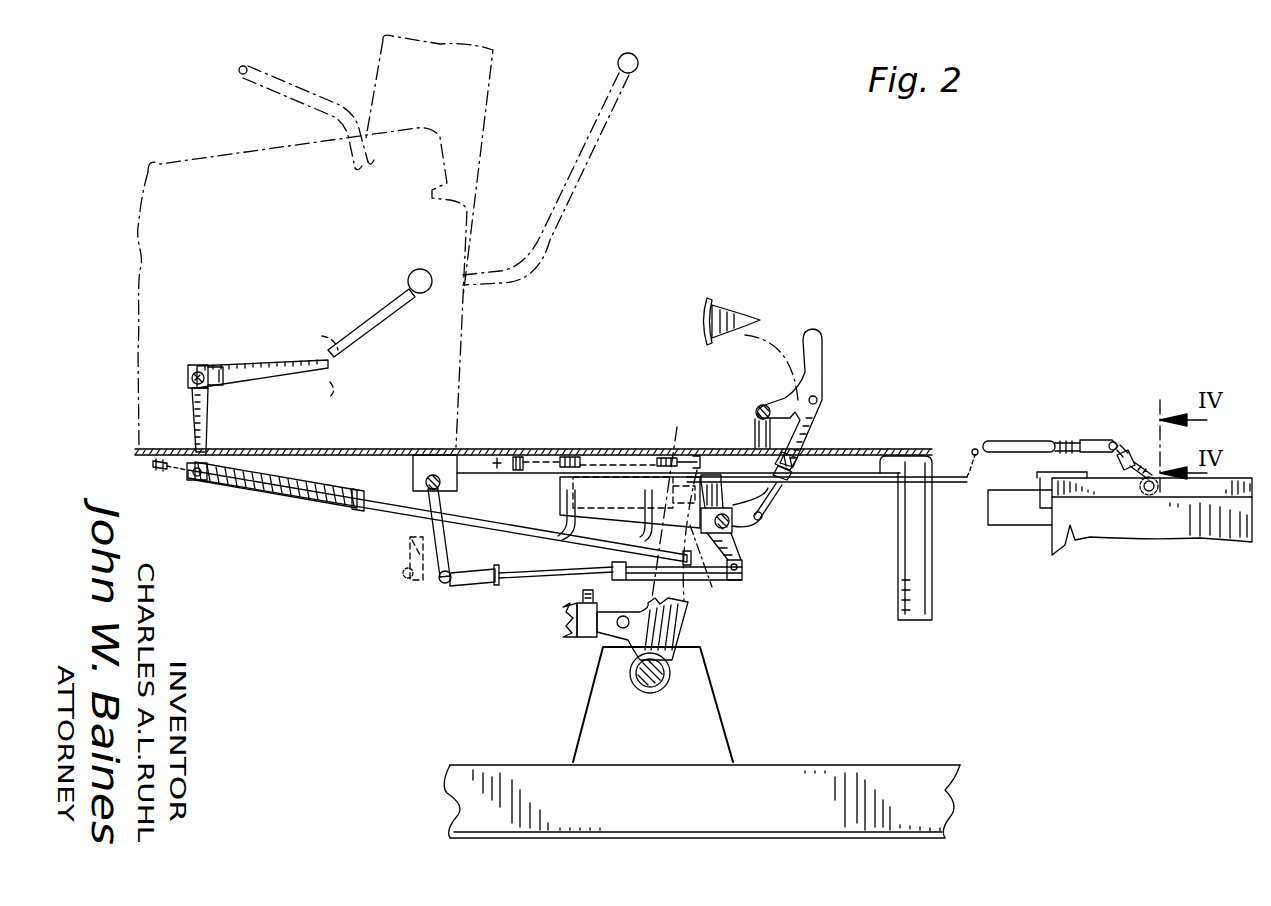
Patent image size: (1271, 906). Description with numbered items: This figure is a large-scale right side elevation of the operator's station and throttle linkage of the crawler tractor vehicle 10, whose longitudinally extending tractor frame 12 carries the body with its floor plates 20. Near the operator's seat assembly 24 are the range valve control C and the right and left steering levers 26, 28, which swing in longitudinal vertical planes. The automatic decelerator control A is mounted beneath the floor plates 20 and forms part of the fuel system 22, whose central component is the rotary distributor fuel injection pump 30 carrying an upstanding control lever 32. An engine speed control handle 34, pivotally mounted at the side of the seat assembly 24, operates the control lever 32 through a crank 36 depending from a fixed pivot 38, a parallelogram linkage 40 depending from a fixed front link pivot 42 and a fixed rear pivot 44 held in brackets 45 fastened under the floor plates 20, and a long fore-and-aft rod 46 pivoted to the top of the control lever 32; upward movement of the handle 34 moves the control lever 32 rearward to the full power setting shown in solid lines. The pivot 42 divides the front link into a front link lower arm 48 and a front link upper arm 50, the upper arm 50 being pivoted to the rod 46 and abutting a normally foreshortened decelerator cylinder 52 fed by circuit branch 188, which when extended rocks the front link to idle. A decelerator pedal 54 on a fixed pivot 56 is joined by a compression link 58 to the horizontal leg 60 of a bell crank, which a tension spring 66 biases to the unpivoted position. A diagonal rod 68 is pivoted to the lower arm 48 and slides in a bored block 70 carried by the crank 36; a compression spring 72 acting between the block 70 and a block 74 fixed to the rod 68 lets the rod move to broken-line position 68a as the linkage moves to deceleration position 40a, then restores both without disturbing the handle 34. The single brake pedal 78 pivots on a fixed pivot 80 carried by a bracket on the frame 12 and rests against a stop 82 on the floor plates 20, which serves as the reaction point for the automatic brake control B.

The vehicle 10 is at (140, 150).
The tractor frame 12 is at (875, 762).
The floor plates 20 is at (900, 450).
The fuel system 22 is at (1218, 560).
The operator's seat assembly 24 is at (165, 165).
The right steering lever 26 is at (608, 132).
The left steering lever 28 is at (640, 64).
The fuel injection pump 30 is at (1066, 548).
The control lever 32 is at (1135, 440).
The engine speed control handle 34 is at (372, 328).
The crank 36 is at (208, 420).
The fixed pivot 38 is at (195, 372).
The parallelogram linkage 40 is at (538, 590).
The broken line deceleration position of parallelogram linkage 40a is at (406, 585).
The fixed front link pivot 42 is at (740, 553).
The fixed rear pivot 44 is at (424, 482).
The brackets 45 is at (480, 460).
The rod 46 is at (1003, 445).
The front link lower arm 48 is at (745, 578).
The front link upper arm 50 is at (697, 470).
The decelerator cylinder 52 is at (560, 535).
The decelerator pedal 54 is at (820, 346).
The fixed pivot 56 is at (758, 406).
The compression link 58 is at (768, 505).
The horizontal leg of bell crank 60 is at (752, 528).
The tension spring 66 is at (548, 455).
The rod 68 is at (388, 515).
The broken line position of rod 68a is at (152, 470).
The bored block 70 is at (190, 490).
The compression spring 72 is at (270, 500).
The block 74 is at (348, 512).
The brake pedal 78 is at (730, 300).
The fixed pivot 80 is at (668, 675).
The stop 82 is at (772, 462).
The circuit branch 188 is at (580, 528).
The automatic decelerator control A is at (630, 452).
The automatic brake control B is at (575, 650).
The range valve control C is at (490, 100).